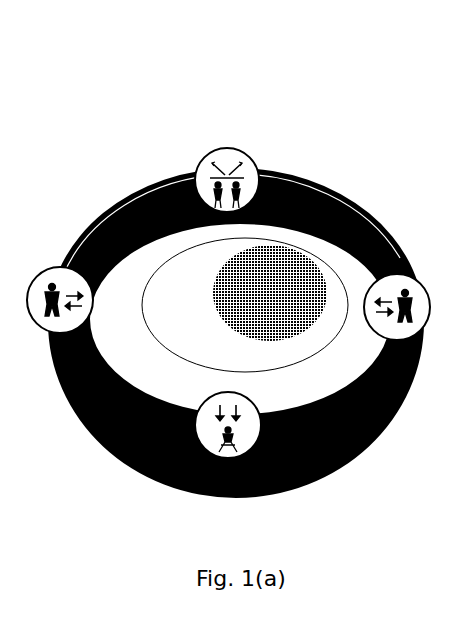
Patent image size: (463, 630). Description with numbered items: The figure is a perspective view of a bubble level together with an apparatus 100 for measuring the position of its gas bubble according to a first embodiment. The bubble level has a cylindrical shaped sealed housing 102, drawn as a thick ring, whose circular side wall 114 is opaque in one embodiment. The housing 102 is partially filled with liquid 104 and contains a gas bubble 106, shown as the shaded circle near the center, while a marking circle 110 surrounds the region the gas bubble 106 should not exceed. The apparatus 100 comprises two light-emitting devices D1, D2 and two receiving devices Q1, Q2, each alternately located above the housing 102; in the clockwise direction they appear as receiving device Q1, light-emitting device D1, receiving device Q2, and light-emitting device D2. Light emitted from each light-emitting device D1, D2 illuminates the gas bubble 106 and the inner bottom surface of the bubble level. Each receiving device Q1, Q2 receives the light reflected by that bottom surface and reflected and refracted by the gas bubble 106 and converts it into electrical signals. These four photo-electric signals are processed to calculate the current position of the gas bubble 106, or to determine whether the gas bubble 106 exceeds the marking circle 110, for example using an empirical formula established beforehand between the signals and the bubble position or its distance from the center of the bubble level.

The apparatus 100 is at (150, 29).
The cylindrical shaped sealed housing 102 is at (353, 202).
The liquid 104 is at (345, 292).
The gas bubble 106 is at (258, 276).
The marking circle 110 is at (162, 267).
The circular side wall 114 is at (370, 455).
The receiving device Q1 is at (240, 178).
The receiving device Q2 is at (211, 425).
The light-emitting device D1 is at (401, 316).
The light-emitting device D2 is at (60, 286).